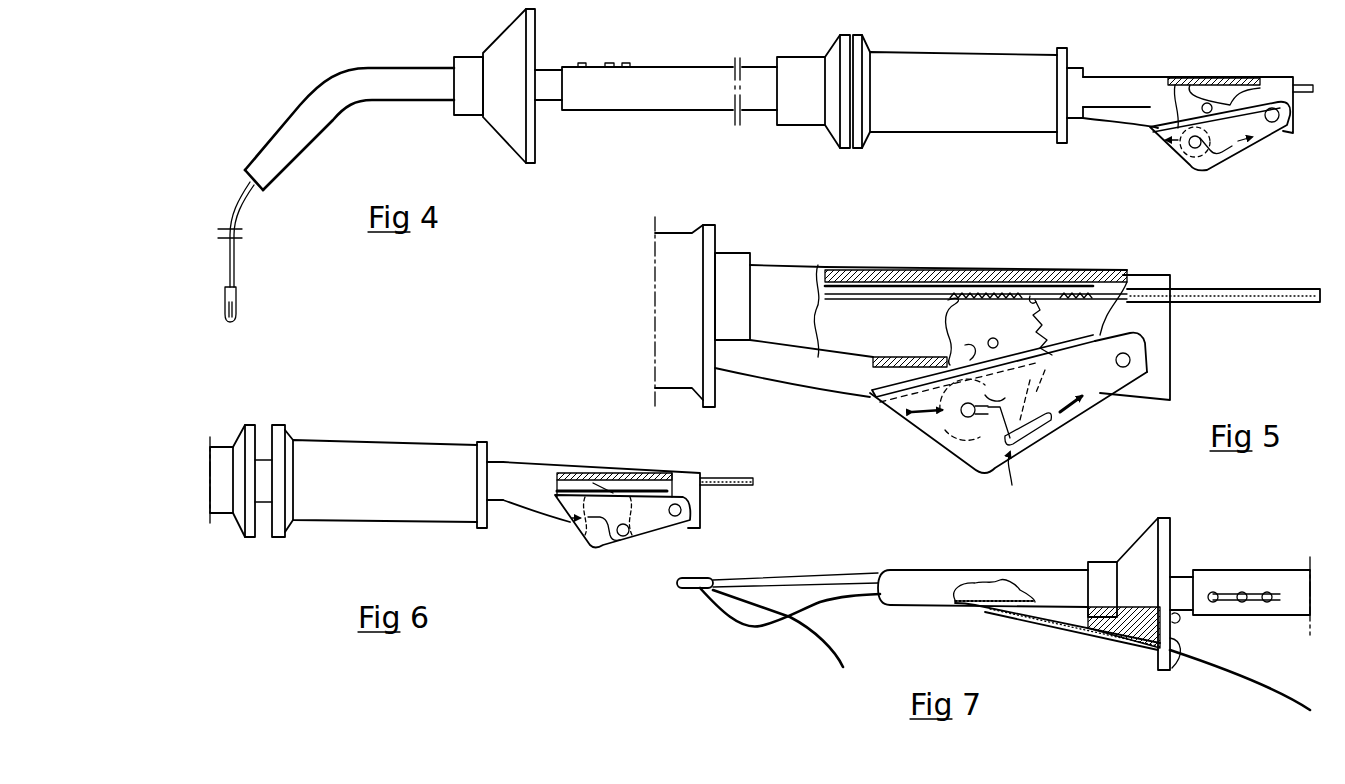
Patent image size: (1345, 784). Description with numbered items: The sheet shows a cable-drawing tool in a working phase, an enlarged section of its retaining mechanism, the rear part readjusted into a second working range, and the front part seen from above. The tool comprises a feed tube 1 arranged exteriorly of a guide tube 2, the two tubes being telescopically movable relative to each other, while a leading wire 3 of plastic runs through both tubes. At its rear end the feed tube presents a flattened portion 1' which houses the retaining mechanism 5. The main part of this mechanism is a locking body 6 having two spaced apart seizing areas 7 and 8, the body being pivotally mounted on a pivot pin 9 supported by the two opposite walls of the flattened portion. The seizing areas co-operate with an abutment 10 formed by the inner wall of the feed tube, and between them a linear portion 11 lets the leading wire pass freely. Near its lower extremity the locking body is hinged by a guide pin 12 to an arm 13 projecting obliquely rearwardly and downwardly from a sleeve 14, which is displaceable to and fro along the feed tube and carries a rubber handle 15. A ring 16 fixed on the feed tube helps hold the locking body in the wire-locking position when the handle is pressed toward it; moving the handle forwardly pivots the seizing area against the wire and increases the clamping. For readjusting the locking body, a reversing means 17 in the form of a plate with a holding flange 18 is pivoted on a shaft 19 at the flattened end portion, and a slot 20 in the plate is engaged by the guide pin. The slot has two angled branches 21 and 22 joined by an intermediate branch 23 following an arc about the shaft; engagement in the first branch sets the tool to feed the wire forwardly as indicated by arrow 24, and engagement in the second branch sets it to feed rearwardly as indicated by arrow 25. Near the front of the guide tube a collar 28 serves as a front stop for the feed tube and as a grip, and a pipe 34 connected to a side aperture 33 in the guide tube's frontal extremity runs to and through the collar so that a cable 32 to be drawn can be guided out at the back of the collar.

In FIG. 4, the feed tube 1 is at (669, 106).
In FIG. 5, the flattened portion 1' is at (1135, 311).
In FIG. 4, the guide tube 2 is at (548, 100).
In FIG. 7, the guide tube 2 is at (1050, 580).
In FIG. 4, the leading wire 3 is at (237, 257).
In FIG. 5, the leading wire 3 is at (1240, 290).
In FIG. 5, the retaining mechanism 5 is at (1042, 305).
In FIG. 4, the locking body 6 is at (1170, 108).
In FIG. 5, the locking body 6 is at (965, 345).
In FIG. 5, the seizing area 7 is at (948, 302).
In FIG. 5, the seizing area 8 is at (1045, 320).
In FIG. 5, the pivot pin 9 is at (990, 341).
In FIG. 5, the abutment 10 is at (975, 280).
In FIG. 5, the linear portion 11 is at (1013, 297).
In FIG. 5, the guide pin 12 is at (963, 418).
In FIG. 6, the guide pin 12 is at (630, 540).
In FIG. 5, the arm 13 is at (806, 372).
In FIG. 5, the sleeve 14 is at (733, 260).
In FIG. 4, the handle 15 is at (955, 63).
In FIG. 5, the handle 15 is at (676, 240).
In FIG. 6, the handle 15 is at (378, 512).
In FIG. 4, the ring 16 is at (803, 65).
In FIG. 6, the ring 16 is at (225, 450).
In FIG. 5, the reversing means 17 is at (975, 458).
In FIG. 6, the reversing means 17 is at (655, 518).
In FIG. 5, the holding flange 18 is at (895, 385).
In FIG. 5, the shaft 19 is at (1130, 357).
In FIG. 5, the slot 20 is at (1014, 484).
In FIG. 5, the slot branch 21 is at (992, 403).
In FIG. 5, the slot branch 22 is at (1038, 430).
In FIG. 6, the slot branch 22 is at (612, 548).
In FIG. 5, the intermediate slot branch 23 is at (1012, 425).
In FIG. 5, the arrow 24 is at (930, 415).
In FIG. 5, the arrow 25 is at (1083, 412).
In FIG. 7, the collar 28 is at (1142, 543).
In FIG. 7, the cable 32 is at (1242, 677).
In FIG. 7, the side aperture 33 is at (1000, 612).
In FIG. 7, the pipe 34 is at (1080, 635).